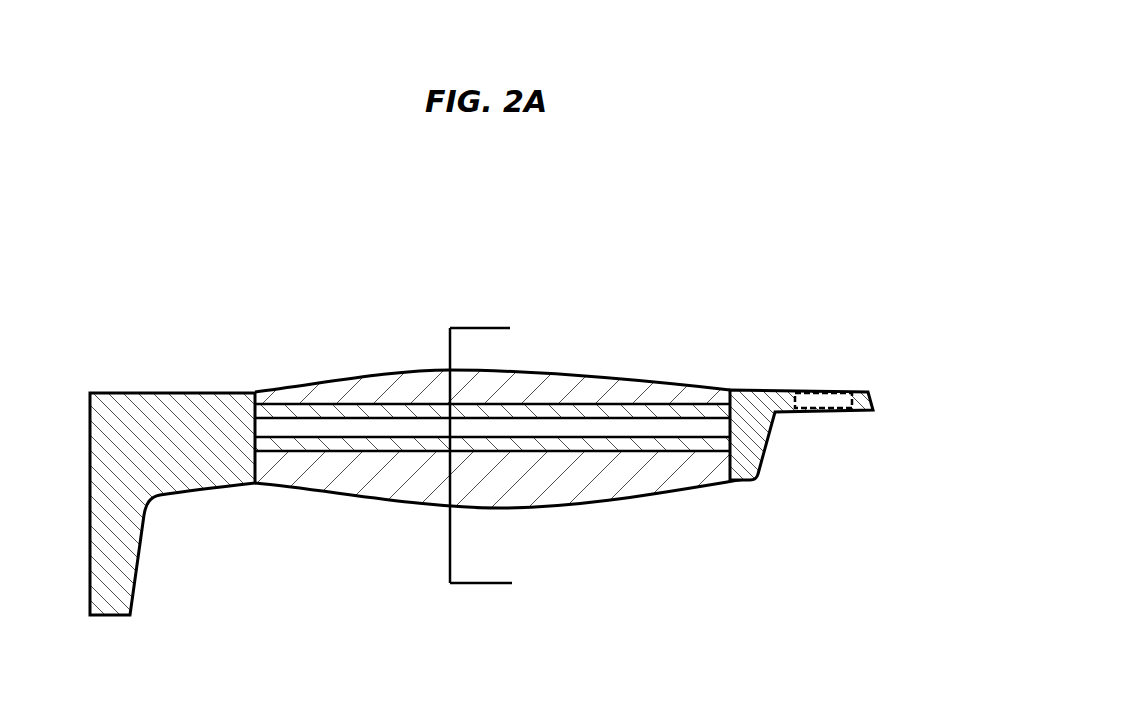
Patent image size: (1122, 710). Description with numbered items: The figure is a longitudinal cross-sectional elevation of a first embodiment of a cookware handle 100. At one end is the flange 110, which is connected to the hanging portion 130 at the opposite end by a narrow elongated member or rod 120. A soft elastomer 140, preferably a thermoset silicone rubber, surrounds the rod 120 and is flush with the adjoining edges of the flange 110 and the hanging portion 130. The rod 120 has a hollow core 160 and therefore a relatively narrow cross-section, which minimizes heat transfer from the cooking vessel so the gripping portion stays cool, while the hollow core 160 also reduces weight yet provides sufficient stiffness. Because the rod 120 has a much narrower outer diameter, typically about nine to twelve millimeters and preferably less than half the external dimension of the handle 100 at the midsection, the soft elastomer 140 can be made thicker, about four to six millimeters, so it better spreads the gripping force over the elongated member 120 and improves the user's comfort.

The cookware handle 100 is at (501, 379).
The flange 110 is at (172, 392).
The elongated member or rod 120 is at (492, 418).
The hanging portion 130 is at (832, 363).
The soft elastomer 140 is at (493, 370).
The hollow core 160 is at (343, 427).